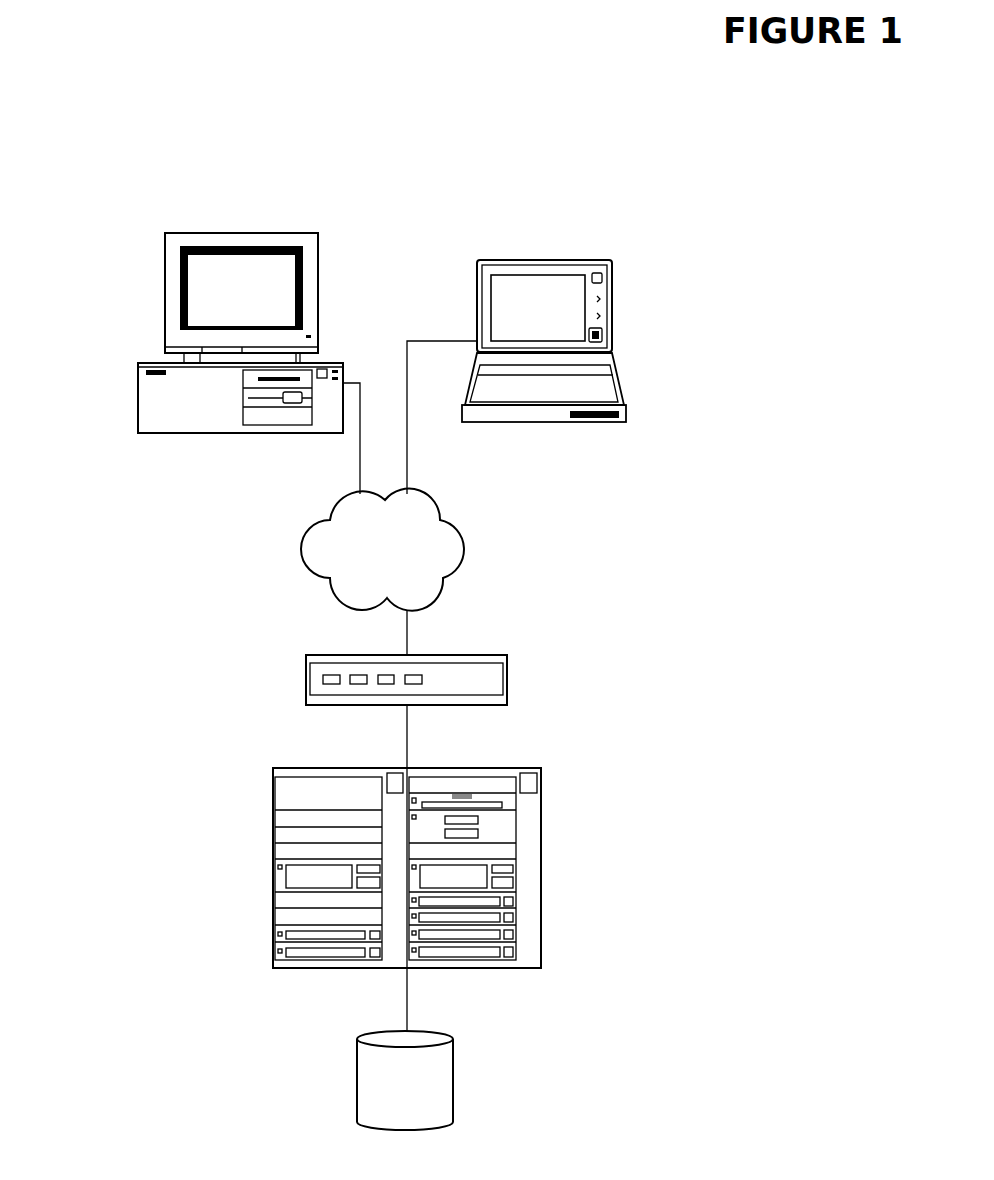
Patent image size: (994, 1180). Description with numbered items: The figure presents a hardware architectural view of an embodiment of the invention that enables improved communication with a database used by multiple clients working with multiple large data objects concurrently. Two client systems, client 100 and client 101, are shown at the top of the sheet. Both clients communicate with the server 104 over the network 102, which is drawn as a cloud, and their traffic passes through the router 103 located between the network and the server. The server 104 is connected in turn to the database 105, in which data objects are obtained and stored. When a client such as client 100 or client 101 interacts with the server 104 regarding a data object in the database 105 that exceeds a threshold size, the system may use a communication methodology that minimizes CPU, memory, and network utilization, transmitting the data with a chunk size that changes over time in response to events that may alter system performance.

The client 100 is at (138, 382).
The client 101 is at (613, 343).
The network 102 is at (303, 553).
The router 103 is at (306, 688).
The server 104 is at (273, 868).
The database 105 is at (357, 1088).